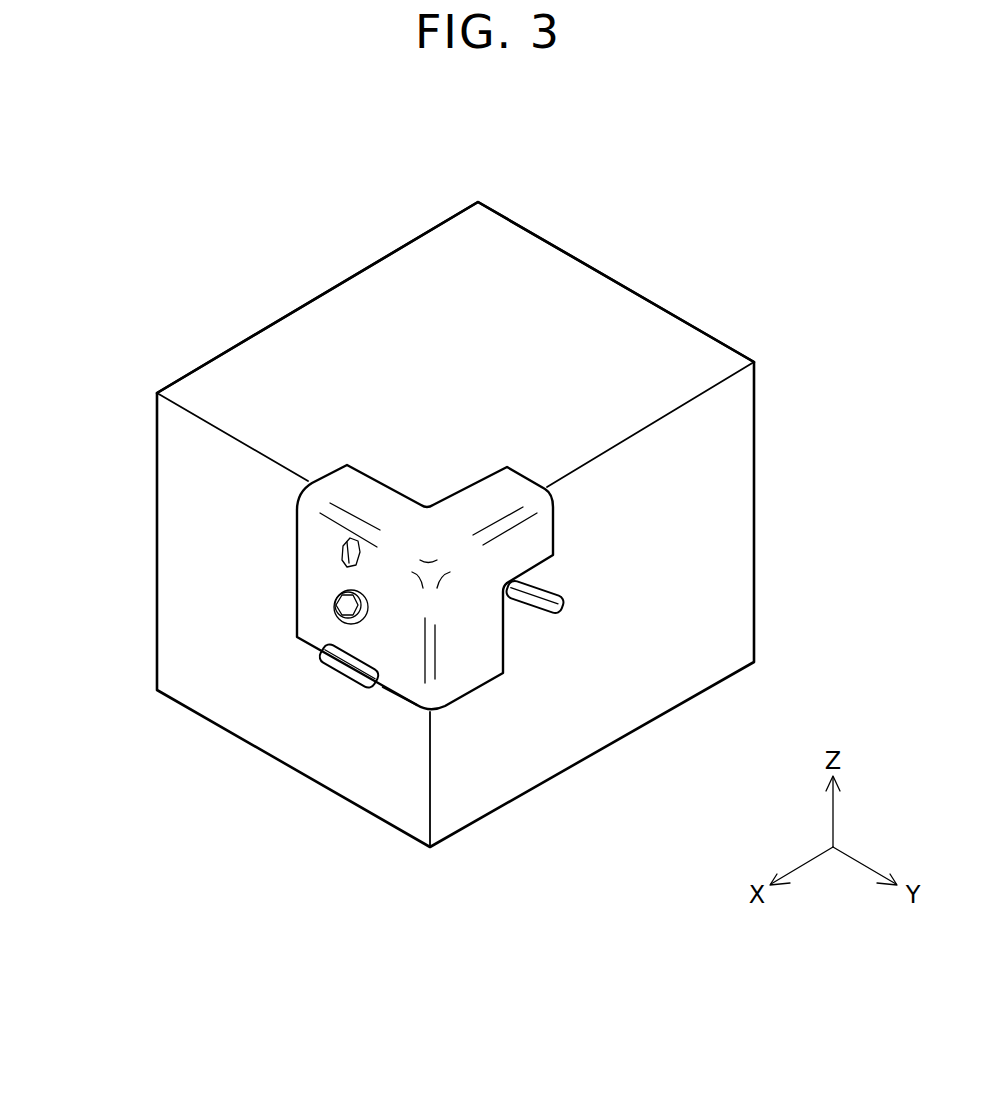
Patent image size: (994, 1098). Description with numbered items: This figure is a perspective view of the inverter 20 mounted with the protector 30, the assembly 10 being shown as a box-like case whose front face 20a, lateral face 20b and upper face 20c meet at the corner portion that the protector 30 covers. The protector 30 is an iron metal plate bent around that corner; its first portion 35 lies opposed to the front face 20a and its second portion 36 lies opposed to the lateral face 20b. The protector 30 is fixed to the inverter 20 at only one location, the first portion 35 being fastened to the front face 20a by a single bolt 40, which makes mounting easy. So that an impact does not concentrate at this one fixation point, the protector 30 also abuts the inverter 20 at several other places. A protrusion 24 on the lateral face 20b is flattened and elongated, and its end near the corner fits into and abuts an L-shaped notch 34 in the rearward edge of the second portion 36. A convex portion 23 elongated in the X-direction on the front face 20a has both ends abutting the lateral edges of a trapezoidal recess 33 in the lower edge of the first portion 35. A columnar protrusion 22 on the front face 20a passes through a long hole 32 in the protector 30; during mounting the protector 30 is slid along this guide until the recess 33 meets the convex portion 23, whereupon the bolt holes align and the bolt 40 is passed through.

The corner fitting assembly 10 is at (115, 212).
The inverter 20 is at (532, 257).
The front face 20a is at (202, 592).
The lateral face 20b is at (702, 462).
The upper face 20c is at (647, 357).
The columnar protrusion 22 is at (340, 562).
The convex portion 23 is at (338, 670).
The protrusion 24 is at (548, 612).
The protector 30 is at (337, 483).
The long hole 32 is at (337, 480).
The trapezoidal recess 33 is at (383, 698).
The notch 34 is at (512, 616).
The first portion 35 is at (407, 682).
The second portion 36 is at (470, 669).
The bolt 40 is at (333, 609).